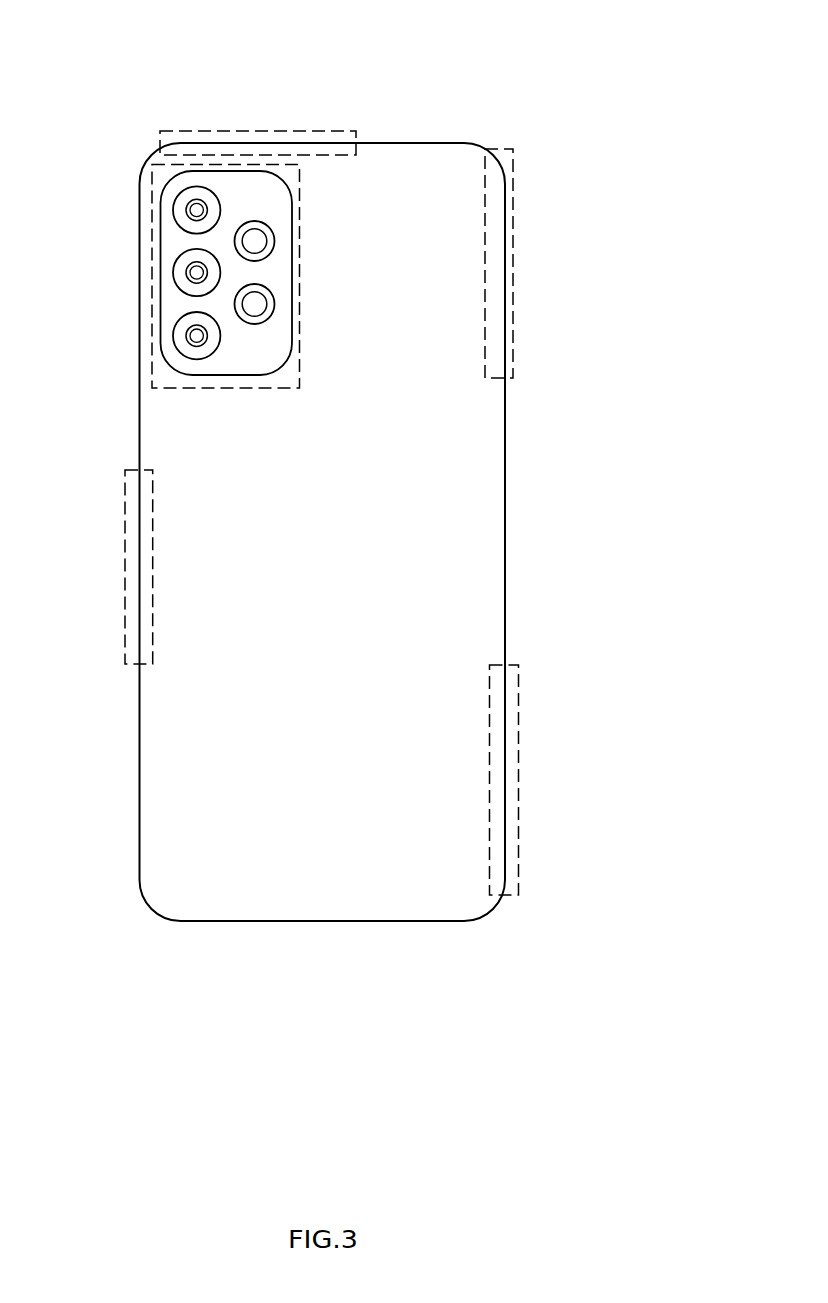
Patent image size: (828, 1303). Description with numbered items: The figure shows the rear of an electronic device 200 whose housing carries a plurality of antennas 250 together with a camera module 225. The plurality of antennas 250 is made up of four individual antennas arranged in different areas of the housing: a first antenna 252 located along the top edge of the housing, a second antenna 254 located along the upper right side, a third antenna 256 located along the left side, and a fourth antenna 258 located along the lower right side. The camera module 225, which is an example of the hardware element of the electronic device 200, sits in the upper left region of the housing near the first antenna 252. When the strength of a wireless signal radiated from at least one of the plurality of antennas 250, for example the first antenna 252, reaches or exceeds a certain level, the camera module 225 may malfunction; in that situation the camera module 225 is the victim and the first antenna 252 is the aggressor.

The electronic device 200 is at (471, 28).
The camera module 225 is at (152, 278).
The plurality of antennas 250 is at (658, 62).
The first antenna 252 is at (255, 130).
The second antenna 254 is at (513, 263).
The third antenna 256 is at (125, 568).
The fourth antenna 258 is at (518, 778).